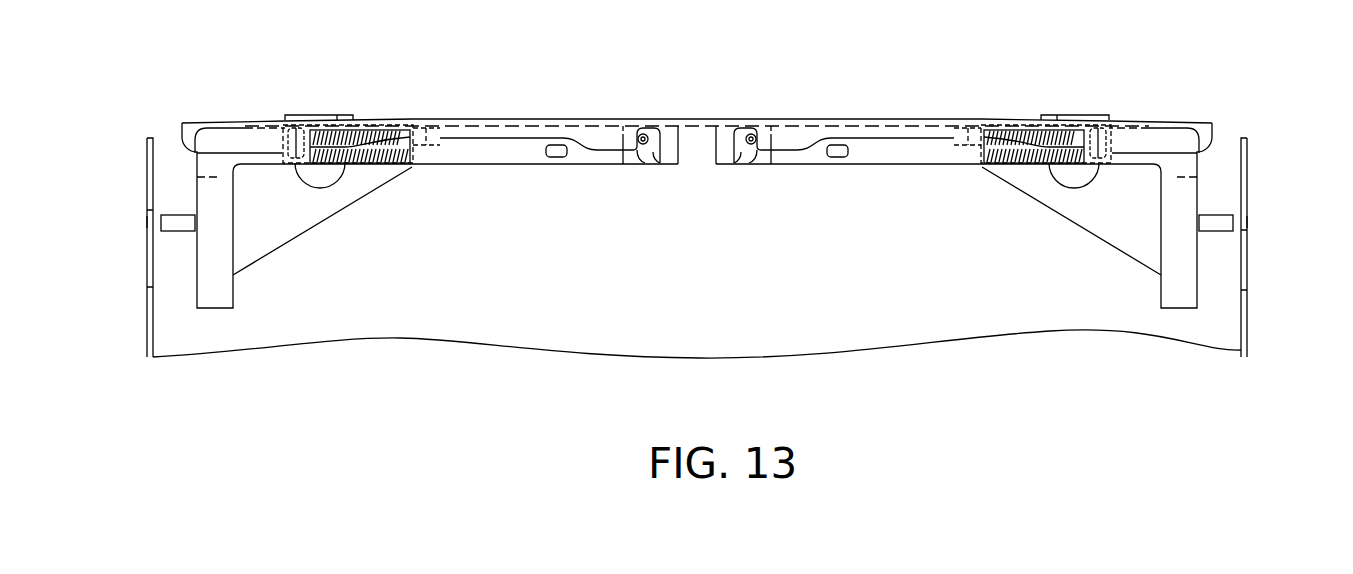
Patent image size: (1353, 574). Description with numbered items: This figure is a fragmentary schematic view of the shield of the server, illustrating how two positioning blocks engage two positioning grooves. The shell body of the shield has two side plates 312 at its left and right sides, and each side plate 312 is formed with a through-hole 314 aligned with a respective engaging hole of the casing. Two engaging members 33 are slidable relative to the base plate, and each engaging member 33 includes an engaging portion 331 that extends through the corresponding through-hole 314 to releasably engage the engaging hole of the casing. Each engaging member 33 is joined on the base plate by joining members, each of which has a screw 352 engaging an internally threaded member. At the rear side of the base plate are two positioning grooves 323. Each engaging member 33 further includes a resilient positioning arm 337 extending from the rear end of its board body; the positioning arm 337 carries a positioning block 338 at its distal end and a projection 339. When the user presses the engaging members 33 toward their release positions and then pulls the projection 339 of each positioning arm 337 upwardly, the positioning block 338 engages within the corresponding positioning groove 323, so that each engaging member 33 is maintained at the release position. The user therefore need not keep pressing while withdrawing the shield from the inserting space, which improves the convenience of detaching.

The side plate 312 is at (146, 165).
The through-hole 314 is at (147, 222).
The engaging portion 331 is at (173, 217).
The engaging member 33 is at (277, 258).
The resilient positioning arm 337 is at (503, 148).
The positioning block 338 is at (643, 133).
The projection 339 is at (556, 158).
The positioning groove 323 is at (645, 150).
The screw 352 is at (320, 173).